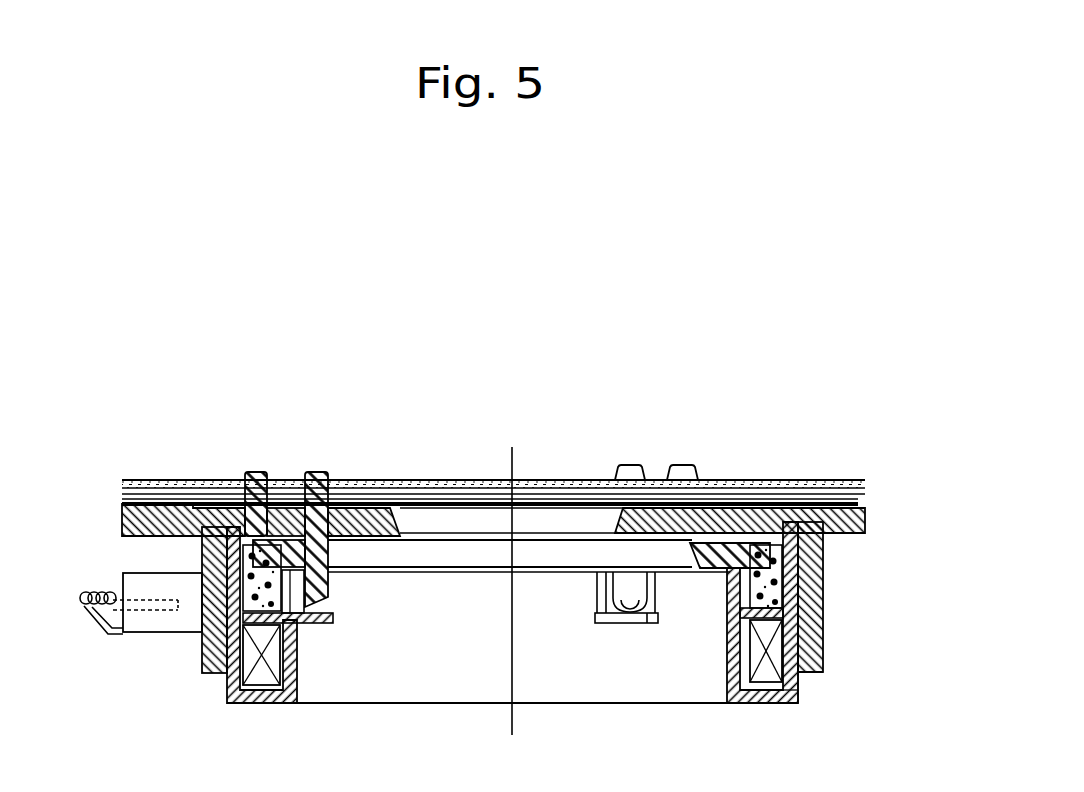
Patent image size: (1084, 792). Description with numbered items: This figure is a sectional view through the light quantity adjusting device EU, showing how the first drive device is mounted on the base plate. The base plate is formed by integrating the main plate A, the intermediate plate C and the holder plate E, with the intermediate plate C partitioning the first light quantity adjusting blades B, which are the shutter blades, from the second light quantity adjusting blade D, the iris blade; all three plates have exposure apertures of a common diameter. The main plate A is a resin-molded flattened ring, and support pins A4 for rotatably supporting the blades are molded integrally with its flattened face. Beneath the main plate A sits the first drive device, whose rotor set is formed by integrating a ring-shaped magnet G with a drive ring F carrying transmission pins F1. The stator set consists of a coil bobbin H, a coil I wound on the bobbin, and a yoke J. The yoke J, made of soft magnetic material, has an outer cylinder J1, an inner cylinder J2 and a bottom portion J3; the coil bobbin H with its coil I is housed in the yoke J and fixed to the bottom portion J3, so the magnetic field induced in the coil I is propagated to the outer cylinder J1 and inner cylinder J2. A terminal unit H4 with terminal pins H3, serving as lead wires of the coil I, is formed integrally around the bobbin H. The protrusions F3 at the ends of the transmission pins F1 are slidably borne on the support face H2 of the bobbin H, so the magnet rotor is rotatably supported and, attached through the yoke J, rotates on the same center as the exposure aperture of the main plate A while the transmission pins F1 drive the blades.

The light quantity adjusting device EU is at (724, 398).
The main plate A is at (866, 512).
The support pin A4 is at (250, 471).
The first light quantity adjusting blade B is at (527, 481).
The intermediate plate C is at (777, 502).
The second light quantity adjusting blade D is at (577, 492).
The holder plate E is at (747, 480).
The drive ring F is at (332, 584).
The transmission pin F1 is at (313, 471).
The protrusion F3 is at (334, 619).
The magnet G is at (790, 580).
The coil bobbin H is at (806, 606).
The support face H2 is at (306, 614).
The terminal pin H3 is at (88, 616).
The terminal unit H4 is at (171, 630).
The coil I is at (776, 654).
The yoke J is at (742, 704).
The outer cylinder J1 is at (800, 673).
The inner cylinder J2 is at (727, 704).
The bottom portion J3 is at (797, 704).